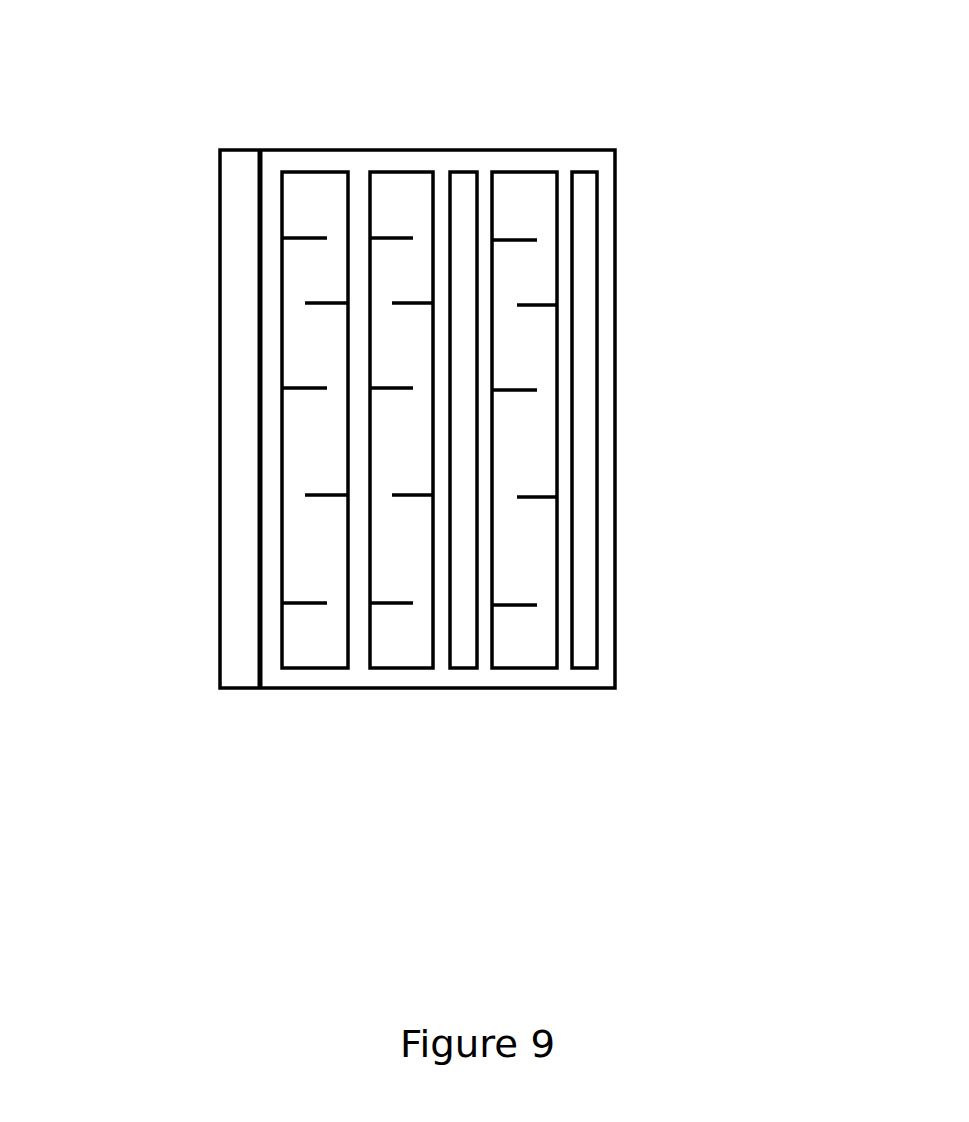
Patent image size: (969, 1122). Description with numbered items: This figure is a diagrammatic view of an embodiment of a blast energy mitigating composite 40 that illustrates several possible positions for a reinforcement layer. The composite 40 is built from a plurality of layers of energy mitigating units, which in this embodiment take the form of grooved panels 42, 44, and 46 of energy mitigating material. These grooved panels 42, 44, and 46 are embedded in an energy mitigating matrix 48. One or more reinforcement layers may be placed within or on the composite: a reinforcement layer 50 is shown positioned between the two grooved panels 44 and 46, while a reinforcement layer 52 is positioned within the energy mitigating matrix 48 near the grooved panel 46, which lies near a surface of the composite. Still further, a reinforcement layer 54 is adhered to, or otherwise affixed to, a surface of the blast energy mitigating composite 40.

The blast energy mitigating composite 40 is at (722, 107).
The grooved panel 42 is at (333, 202).
The grooved panel 44 is at (415, 193).
The grooved panel 46 is at (530, 193).
The energy mitigating matrix 48 is at (608, 350).
The reinforcement layer 50 is at (470, 653).
The reinforcement layer 52 is at (587, 653).
The reinforcement layer 54 is at (230, 437).